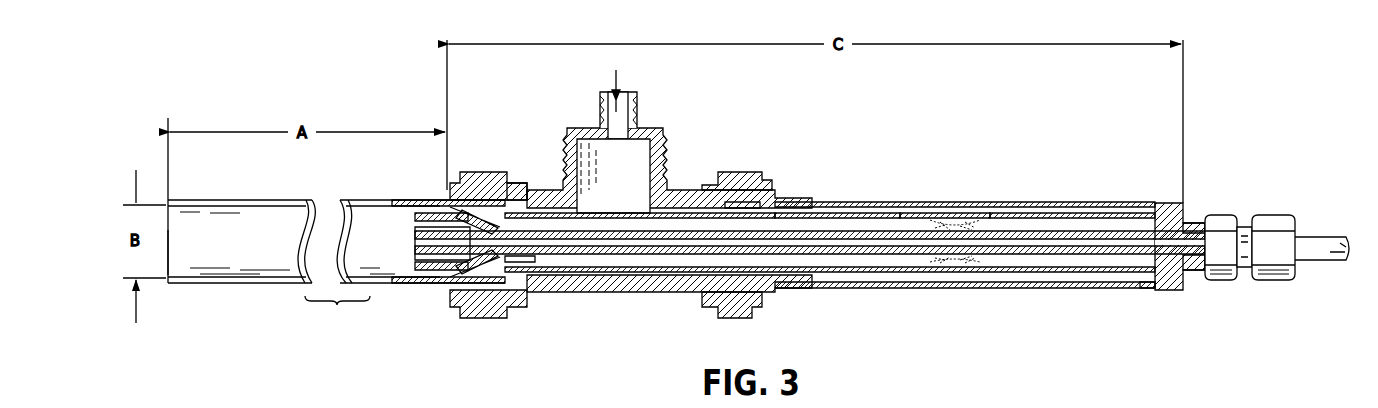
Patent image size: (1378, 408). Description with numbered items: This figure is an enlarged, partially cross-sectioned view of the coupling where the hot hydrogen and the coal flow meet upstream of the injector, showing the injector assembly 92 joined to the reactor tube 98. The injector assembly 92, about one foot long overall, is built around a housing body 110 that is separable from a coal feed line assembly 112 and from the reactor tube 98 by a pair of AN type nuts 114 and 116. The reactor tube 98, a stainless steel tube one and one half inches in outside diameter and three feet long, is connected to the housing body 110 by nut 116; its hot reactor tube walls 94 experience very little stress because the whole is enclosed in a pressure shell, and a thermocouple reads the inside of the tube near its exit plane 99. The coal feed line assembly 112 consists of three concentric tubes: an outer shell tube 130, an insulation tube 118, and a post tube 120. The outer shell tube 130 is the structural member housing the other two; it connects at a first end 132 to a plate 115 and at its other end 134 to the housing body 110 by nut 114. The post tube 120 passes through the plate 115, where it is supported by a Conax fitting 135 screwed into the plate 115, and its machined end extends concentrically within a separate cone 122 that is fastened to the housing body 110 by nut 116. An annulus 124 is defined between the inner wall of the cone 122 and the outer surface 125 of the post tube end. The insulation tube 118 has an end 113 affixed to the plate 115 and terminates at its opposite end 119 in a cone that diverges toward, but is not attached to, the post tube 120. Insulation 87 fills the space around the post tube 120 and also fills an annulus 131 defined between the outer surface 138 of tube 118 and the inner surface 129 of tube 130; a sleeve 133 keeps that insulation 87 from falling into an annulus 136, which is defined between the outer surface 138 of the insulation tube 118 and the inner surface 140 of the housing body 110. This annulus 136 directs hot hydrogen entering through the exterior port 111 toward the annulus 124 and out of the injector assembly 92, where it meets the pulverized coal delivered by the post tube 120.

The insulation 87 is at (955, 280).
The injector assembly 92 is at (631, 223).
The reactor tube walls 94 is at (270, 263).
The reactor tube 98 is at (263, 215).
The exit plane 99 is at (168, 260).
The housing body 110 is at (680, 186).
The hot hydrogen exterior port 111 is at (625, 95).
The coal feed line assembly 112 is at (965, 192).
The end of insulation tube 113 is at (1148, 277).
The AN nut 114 is at (743, 318).
The plate 115 is at (1167, 197).
The AN nut 116 is at (485, 318).
The insulation tube 118 is at (1008, 215).
The end of insulation tube 119 is at (448, 285).
The post tube 120 is at (1053, 235).
The cone 122 is at (450, 197).
The annulus 124 is at (412, 223).
The outer surface of post tube end 125 is at (515, 262).
The inner surface of outer shell tube 129 is at (907, 210).
The outer shell tube 130 is at (860, 202).
The annulus 131 is at (813, 212).
The first end of outer shell tube 132 is at (1157, 220).
The sleeve 133 is at (703, 273).
The other end of outer shell tube 134 is at (742, 208).
The Conax fitting 135 is at (1281, 283).
The annulus 136 is at (577, 213).
The outer surface of insulation tube 138 is at (538, 213).
The inner surface of housing body 140 is at (508, 172).